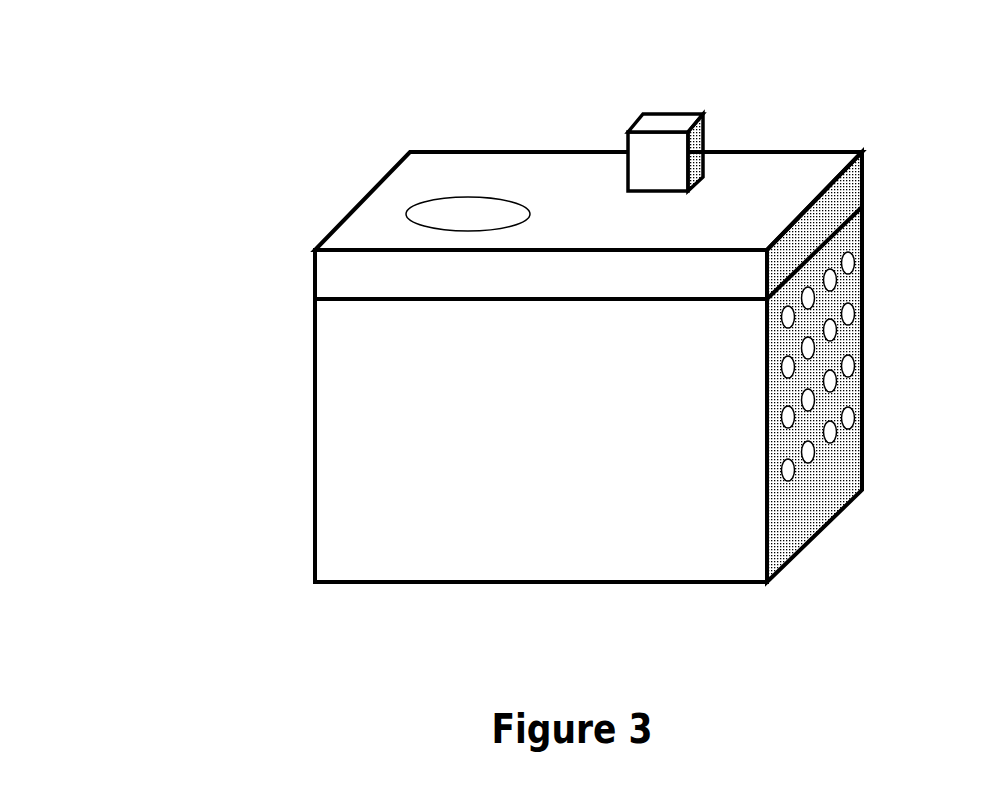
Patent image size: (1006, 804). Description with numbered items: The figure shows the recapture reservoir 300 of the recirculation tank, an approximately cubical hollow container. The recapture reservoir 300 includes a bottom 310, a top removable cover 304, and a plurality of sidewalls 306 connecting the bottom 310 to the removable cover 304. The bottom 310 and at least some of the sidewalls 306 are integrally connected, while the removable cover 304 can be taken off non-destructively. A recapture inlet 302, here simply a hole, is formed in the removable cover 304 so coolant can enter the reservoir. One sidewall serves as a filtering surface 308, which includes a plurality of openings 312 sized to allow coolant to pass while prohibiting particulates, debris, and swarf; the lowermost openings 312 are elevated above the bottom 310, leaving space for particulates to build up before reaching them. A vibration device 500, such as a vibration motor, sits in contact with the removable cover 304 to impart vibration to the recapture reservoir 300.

The recapture reservoir 300 is at (511, 345).
The recapture inlet 302 is at (468, 192).
The removable cover 304 is at (456, 163).
The sidewall 306 is at (313, 442).
The filtering surface 308 is at (817, 515).
The bottom 310 is at (540, 584).
The openings 312 is at (821, 400).
The vibration device 500 is at (688, 122).